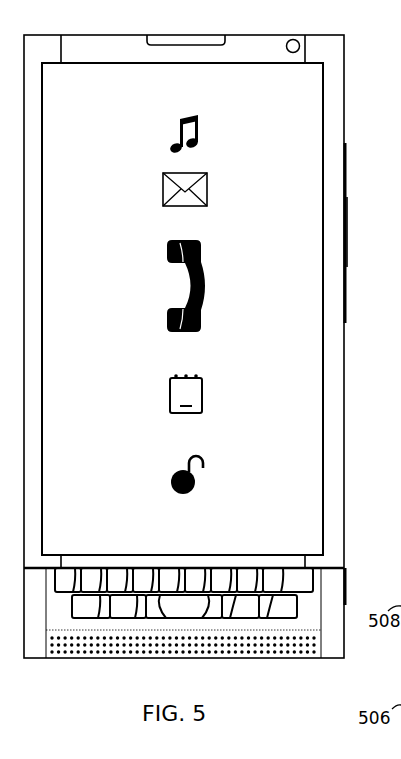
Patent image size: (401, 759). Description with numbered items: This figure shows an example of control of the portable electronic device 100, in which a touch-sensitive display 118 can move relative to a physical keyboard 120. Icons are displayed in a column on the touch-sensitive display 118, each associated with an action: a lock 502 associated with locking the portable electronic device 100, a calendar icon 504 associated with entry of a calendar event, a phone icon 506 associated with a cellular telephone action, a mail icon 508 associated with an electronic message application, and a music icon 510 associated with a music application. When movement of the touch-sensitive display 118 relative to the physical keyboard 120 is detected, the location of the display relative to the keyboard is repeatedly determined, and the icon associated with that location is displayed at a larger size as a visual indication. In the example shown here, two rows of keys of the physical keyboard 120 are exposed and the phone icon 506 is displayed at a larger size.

The portable electronic device 100 is at (56, 684).
The touch-sensitive display 118 is at (303, 538).
The physical keyboard 120 is at (297, 607).
The lock 502 is at (197, 483).
The calendar icon 504 is at (202, 397).
The phone icon 506 is at (203, 277).
The mail icon 508 is at (207, 187).
The music icon 510 is at (198, 133).